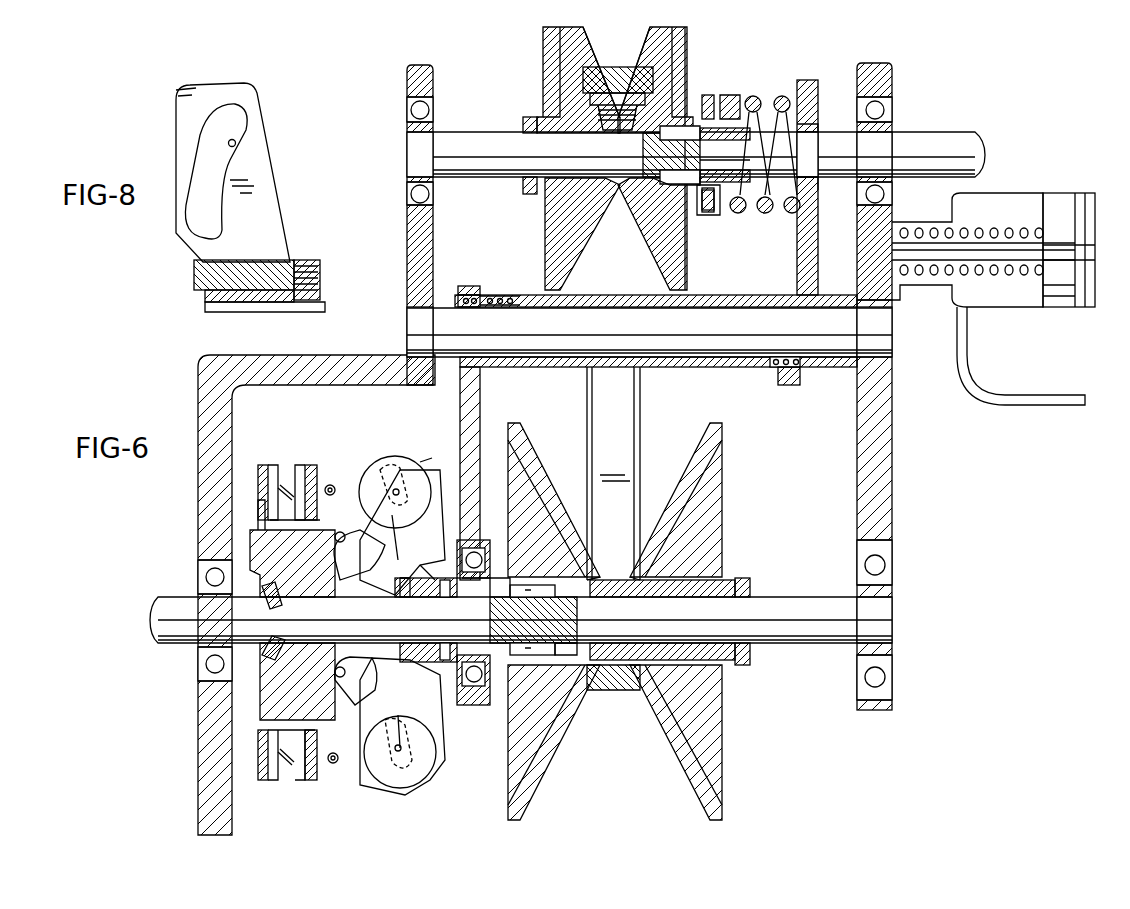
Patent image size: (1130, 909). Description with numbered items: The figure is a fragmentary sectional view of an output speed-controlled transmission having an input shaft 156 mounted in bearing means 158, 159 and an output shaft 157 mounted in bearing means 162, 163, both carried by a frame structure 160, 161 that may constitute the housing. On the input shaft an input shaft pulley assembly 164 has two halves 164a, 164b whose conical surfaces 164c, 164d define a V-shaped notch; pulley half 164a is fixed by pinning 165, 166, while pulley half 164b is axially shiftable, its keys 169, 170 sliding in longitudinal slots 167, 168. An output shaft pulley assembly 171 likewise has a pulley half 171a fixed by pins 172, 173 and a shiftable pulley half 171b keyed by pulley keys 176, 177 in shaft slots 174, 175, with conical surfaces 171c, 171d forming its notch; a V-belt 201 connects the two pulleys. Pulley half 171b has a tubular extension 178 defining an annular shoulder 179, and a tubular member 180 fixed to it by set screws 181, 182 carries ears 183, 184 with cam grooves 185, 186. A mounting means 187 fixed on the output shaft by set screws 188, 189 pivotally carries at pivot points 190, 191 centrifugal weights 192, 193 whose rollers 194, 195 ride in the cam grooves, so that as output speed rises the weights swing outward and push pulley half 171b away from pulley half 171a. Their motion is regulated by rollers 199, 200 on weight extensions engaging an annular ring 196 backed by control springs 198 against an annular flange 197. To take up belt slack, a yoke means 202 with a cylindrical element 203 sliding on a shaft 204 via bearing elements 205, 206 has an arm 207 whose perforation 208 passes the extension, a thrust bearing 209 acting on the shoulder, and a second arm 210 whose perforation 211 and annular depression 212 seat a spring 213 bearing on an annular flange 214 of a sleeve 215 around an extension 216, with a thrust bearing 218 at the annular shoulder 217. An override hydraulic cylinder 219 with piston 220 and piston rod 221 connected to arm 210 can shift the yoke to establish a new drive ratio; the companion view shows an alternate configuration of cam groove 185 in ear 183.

In FIG. 6, the input shaft 156 is at (948, 142).
In FIG. 6, the output shaft 157 is at (812, 597).
In FIG. 6, the bearing means 158 is at (407, 104).
In FIG. 6, the bearing means 159 is at (892, 100).
In FIG. 6, the frame structure 160 is at (892, 412).
In FIG. 6, the frame structure 161 is at (395, 357).
In FIG. 6, the bearing means 162 is at (198, 570).
In FIG. 6, the bearing means 163 is at (892, 562).
In FIG. 6, the input shaft pulley assembly 164 is at (690, 40).
In FIG. 6, the pulley half 164a is at (545, 60).
In FIG. 6, the pulley half 164b is at (680, 62).
In FIG. 6, the conical surface 164c is at (570, 55).
In FIG. 6, the conical surface 164d is at (665, 48).
In FIG. 6, the pinning 165 is at (525, 118).
In FIG. 6, the pinning 166 is at (525, 186).
In FIG. 6, the longitudinal slot 167 is at (625, 72).
In FIG. 6, the longitudinal slot 168 is at (708, 142).
In FIG. 6, the key 169 is at (643, 150).
In FIG. 6, the key 170 is at (686, 188).
In FIG. 6, the output shaft pulley assembly 171 is at (565, 760).
In FIG. 6, the pulley half 171a is at (715, 762).
In FIG. 6, the pulley half 171b is at (510, 788).
In FIG. 6, the conical surface 171c is at (705, 440).
In FIG. 6, the conical surface 171d is at (535, 445).
In FIG. 6, the pin 172 is at (742, 578).
In FIG. 6, the pin 173 is at (742, 665).
In FIG. 6, the shaft slot 174 is at (565, 658).
In FIG. 6, the shaft slot 175 is at (590, 555).
In FIG. 6, the pulley key 176 is at (575, 603).
In FIG. 6, the pulley key 177 is at (525, 660).
In FIG. 6, the tubular extension 178 is at (415, 597).
In FIG. 6, the annular shoulder 179 is at (493, 580).
In FIG. 8, the tubular member 180 is at (200, 276).
In FIG. 6, the tubular member 180 is at (395, 587).
In FIG. 6, the set screw 181 is at (438, 576).
In FIG. 6, the set screw 182 is at (405, 662).
In FIG. 8, the ear 183 is at (262, 182).
In FIG. 6, the ear 183 is at (418, 500).
In FIG. 6, the ear 184 is at (428, 715).
In FIG. 8, the cam groove 185 is at (236, 143).
In FIG. 6, the cam groove 185 is at (408, 528).
In FIG. 6, the cam groove 186 is at (386, 672).
In FIG. 6, the mounting means 187 is at (250, 540).
In FIG. 6, the pin or set screw 188 is at (262, 605).
In FIG. 6, the pin or set screw 189 is at (285, 640).
In FIG. 6, the pivot point 190 is at (343, 545).
In FIG. 6, the pivot point 191 is at (312, 660).
In FIG. 6, the centrifugal weight 192 is at (372, 465).
In FIG. 6, the centrifugal weight 193 is at (425, 762).
In FIG. 6, the roller 194 is at (405, 468).
In FIG. 6, the roller 195 is at (418, 745).
In FIG. 6, the annular ring 196 is at (308, 470).
In FIG. 6, the annular flange 197 is at (268, 470).
In FIG. 6, the control spring 198 is at (286, 470).
In FIG. 6, the roller 199 is at (331, 484).
In FIG. 6, the roller 200 is at (337, 765).
In FIG. 6, the V-belt 201 is at (630, 414).
In FIG. 6, the yoke means 202 is at (615, 293).
In FIG. 6, the cylindrical element 203 is at (722, 368).
In FIG. 6, the shaft 204 is at (752, 332).
In FIG. 6, the bearing element 205 is at (790, 380).
In FIG. 6, the bearing element 206 is at (512, 278).
In FIG. 6, the arm 207 is at (480, 388).
In FIG. 6, the perforation 208 is at (460, 590).
In FIG. 6, the thrust bearing 209 is at (485, 550).
In FIG. 6, the second arm 210 is at (797, 268).
In FIG. 6, the perforation 211 is at (820, 130).
In FIG. 6, the annular depression 212 is at (819, 200).
In FIG. 6, the spring 213 is at (782, 96).
In FIG. 6, the annular flange 214 is at (730, 92).
In FIG. 6, the sleeve 215 is at (753, 96).
In FIG. 6, the extension 216 is at (745, 178).
In FIG. 6, the annular shoulder 217 is at (705, 95).
In FIG. 6, the thrust bearing 218 is at (705, 215).
In FIG. 6, the hydraulic cylinder 219 is at (1005, 193).
In FIG. 6, the piston 220 is at (1065, 193).
In FIG. 6, the piston rod 221 is at (925, 243).